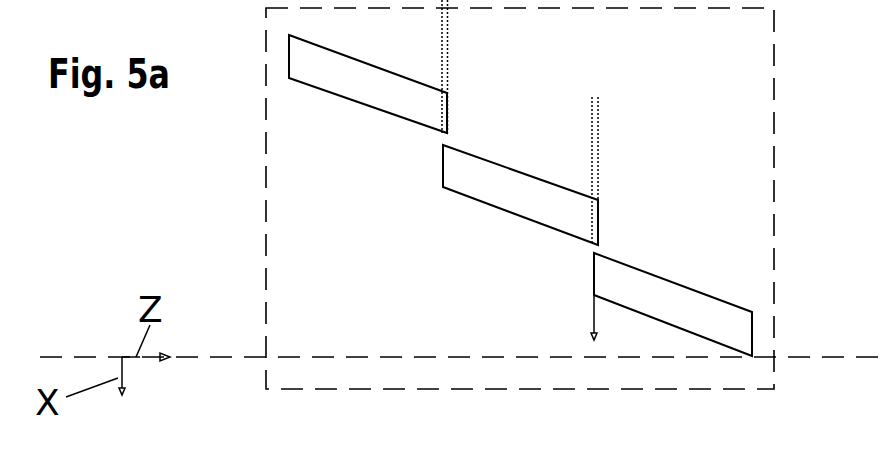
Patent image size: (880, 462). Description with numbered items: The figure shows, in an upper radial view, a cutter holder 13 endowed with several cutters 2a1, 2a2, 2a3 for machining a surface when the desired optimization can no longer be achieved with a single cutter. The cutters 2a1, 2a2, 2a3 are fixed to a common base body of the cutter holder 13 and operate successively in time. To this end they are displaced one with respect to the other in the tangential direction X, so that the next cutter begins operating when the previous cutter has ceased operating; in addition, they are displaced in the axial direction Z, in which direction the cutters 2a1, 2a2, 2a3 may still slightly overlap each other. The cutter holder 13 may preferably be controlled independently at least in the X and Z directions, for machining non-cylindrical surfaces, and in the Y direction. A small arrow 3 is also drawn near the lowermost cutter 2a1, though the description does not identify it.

The cutter holder 13 is at (772, 9).
The cutter 2a1 is at (673, 304).
The cutter 2a2 is at (520, 195).
The cutter 2a3 is at (368, 84).
The beam direction arrow 3 is at (593, 319).